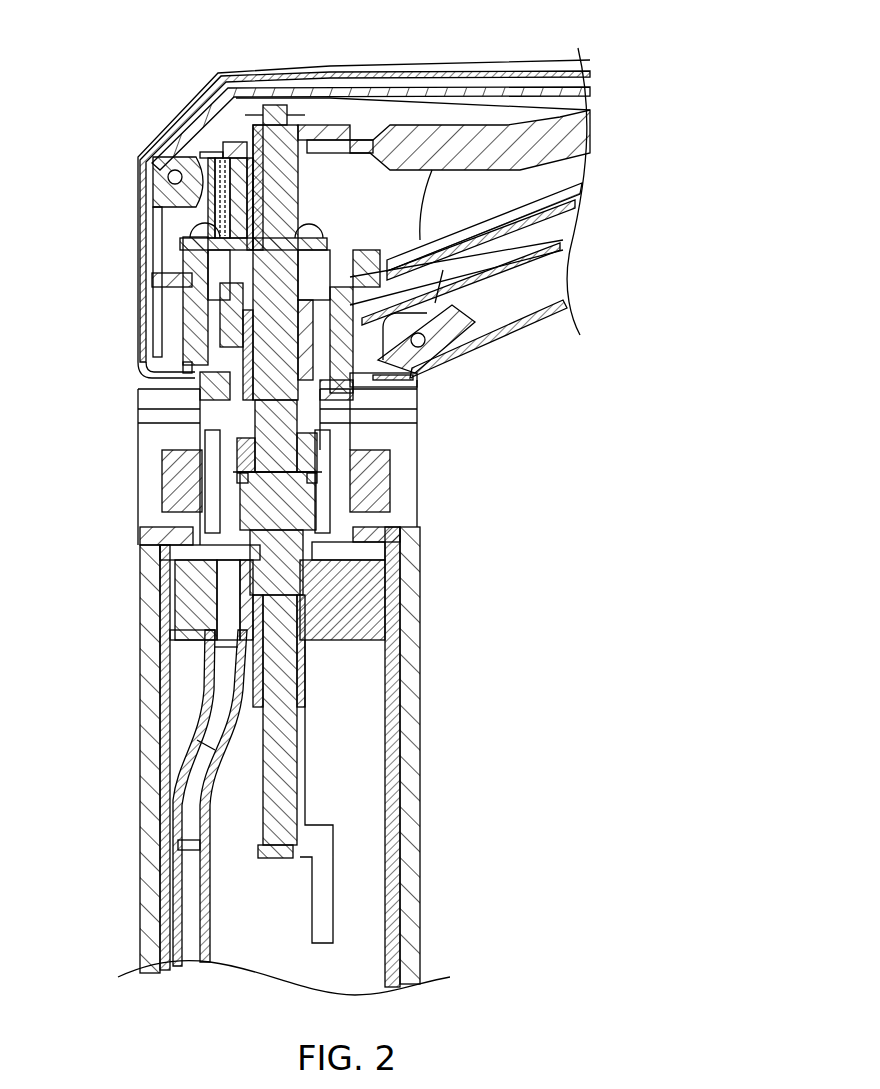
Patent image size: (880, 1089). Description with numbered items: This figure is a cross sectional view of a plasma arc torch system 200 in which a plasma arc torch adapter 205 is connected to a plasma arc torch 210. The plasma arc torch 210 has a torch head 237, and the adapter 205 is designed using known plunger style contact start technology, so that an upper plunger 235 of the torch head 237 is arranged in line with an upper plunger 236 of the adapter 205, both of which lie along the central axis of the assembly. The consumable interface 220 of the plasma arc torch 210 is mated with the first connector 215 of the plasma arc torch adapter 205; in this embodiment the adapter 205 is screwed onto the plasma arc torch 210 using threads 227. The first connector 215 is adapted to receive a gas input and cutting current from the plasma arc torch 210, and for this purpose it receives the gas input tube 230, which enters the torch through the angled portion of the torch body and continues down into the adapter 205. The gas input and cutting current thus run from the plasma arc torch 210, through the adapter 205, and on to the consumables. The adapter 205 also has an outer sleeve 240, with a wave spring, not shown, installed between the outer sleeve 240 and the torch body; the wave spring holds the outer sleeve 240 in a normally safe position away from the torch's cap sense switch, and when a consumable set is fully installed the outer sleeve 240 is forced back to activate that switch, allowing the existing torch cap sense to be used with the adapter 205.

The plasma arc torch system 200 is at (82, 62).
The torch head 237 is at (182, 113).
The upper plunger 235 is at (272, 303).
The threads 227 is at (195, 405).
The gas input tube 230 is at (550, 230).
The plasma arc torch 210 is at (554, 353).
The consumable interface 220 is at (338, 425).
The first connector 215 is at (377, 480).
The upper plunger 236 is at (295, 502).
The outer sleeve 240 is at (148, 735).
The plasma arc torch adapter 205 is at (452, 781).